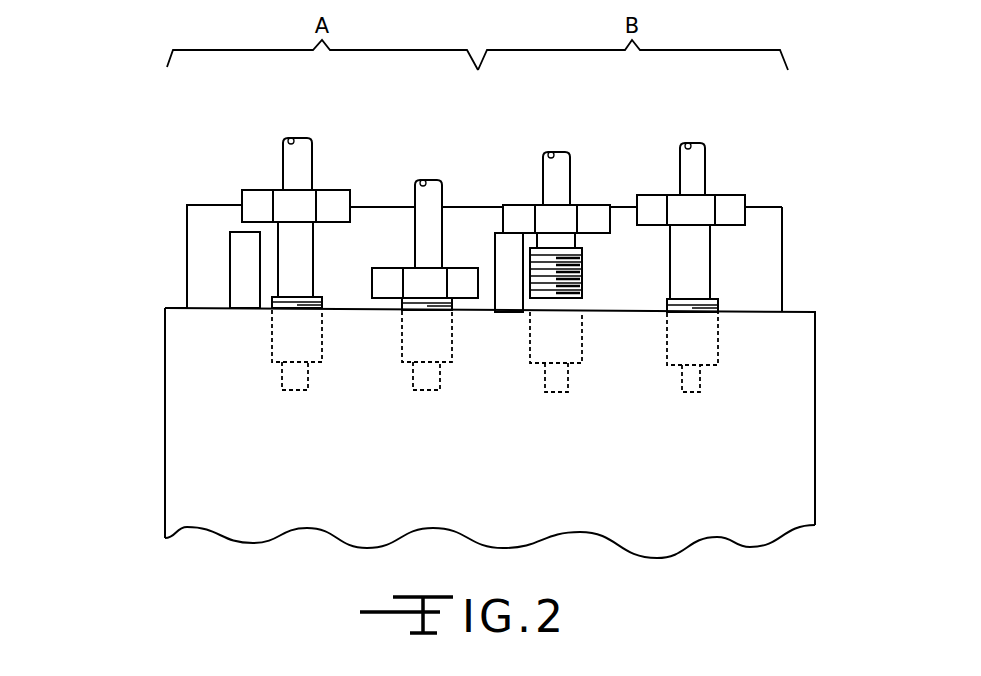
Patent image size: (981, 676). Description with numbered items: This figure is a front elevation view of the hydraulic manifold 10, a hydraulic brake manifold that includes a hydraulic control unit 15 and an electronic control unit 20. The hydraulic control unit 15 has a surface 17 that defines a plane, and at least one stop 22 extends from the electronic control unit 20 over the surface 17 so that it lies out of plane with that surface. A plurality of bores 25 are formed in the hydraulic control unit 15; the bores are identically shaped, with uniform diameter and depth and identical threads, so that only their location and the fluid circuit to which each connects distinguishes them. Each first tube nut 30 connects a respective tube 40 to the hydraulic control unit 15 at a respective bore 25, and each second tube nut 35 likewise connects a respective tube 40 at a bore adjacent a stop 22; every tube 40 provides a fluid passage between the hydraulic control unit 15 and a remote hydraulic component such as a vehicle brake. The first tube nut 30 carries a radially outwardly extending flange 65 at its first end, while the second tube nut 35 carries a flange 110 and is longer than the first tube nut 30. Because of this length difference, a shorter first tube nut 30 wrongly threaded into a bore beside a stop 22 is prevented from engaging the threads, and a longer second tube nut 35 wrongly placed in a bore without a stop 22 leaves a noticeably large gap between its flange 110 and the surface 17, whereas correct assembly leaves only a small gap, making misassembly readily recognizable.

The hydraulic manifold 10 is at (789, 295).
The hydraulic control unit 15 is at (163, 430).
The surface 17 is at (178, 305).
The electronic control unit 20 is at (185, 237).
The stop 22 is at (238, 267).
The bore 25 is at (472, 390).
The first tube nut 30 is at (387, 277).
The second tube nut 35 is at (288, 267).
The tube 40 is at (479, 164).
The flange 65 is at (390, 303).
The flange 110 is at (332, 222).